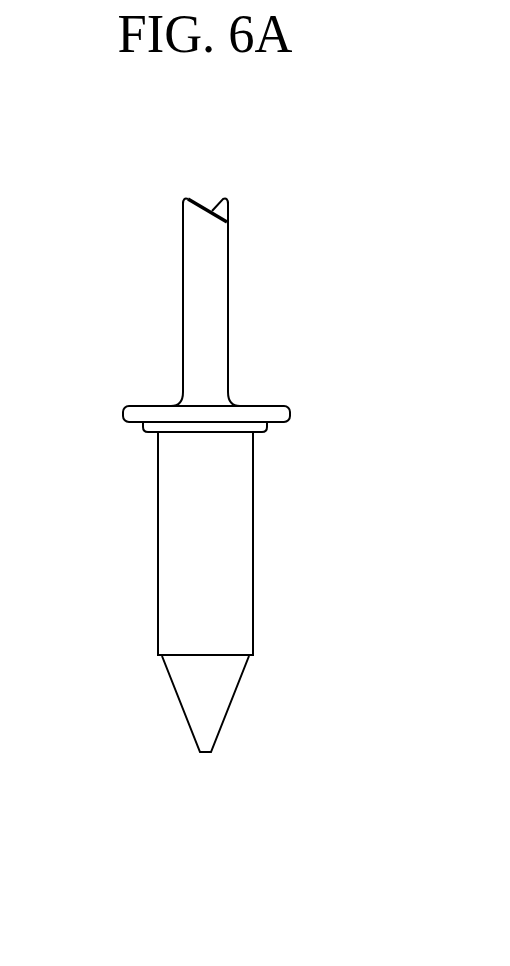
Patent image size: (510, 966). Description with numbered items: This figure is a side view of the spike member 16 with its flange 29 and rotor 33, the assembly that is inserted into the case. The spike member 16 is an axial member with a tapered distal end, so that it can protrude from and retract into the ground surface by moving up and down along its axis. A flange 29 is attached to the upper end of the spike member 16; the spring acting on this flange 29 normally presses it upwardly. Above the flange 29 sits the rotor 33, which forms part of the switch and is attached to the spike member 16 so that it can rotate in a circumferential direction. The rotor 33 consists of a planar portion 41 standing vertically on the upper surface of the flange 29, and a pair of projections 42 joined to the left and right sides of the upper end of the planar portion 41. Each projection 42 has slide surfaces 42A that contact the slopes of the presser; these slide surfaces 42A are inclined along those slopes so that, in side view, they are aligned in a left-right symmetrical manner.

The spike member 16 is at (159, 580).
The flange 29 is at (125, 420).
The rotor 33 is at (194, 274).
The planar portion 41 is at (183, 353).
The projections 42 is at (182, 203).
The slide surfaces 42A is at (197, 199).